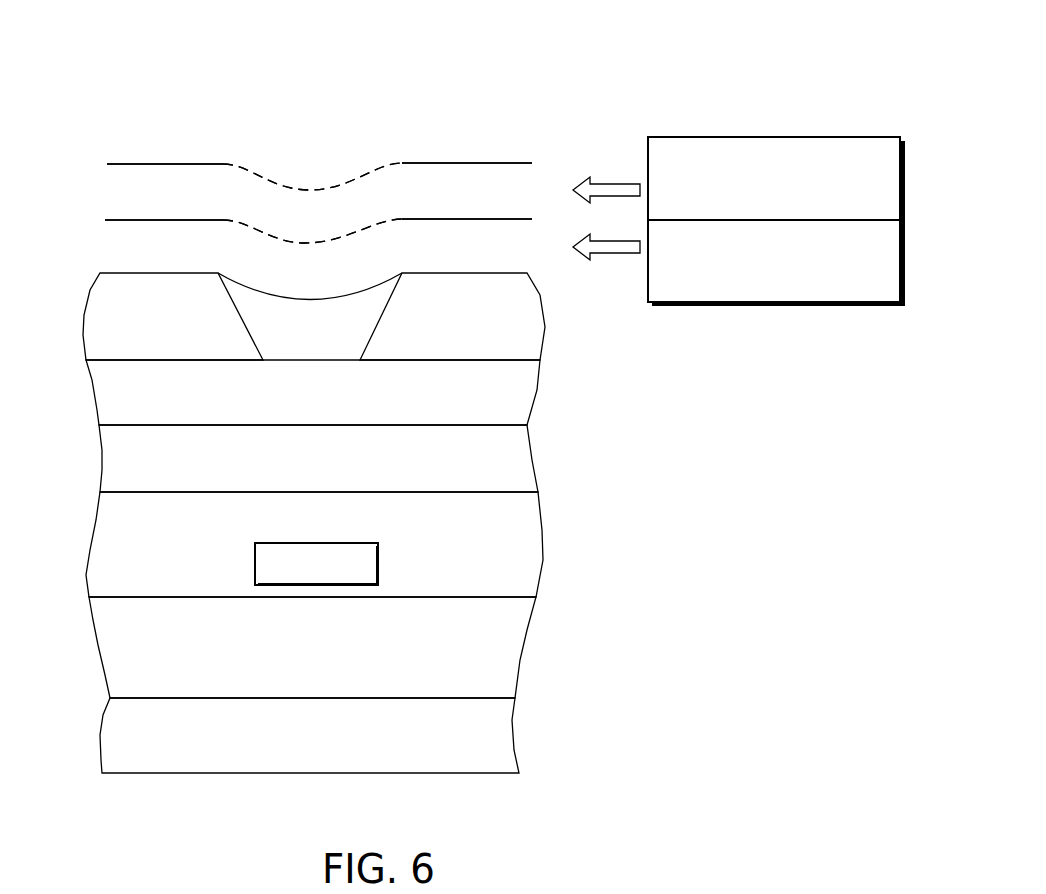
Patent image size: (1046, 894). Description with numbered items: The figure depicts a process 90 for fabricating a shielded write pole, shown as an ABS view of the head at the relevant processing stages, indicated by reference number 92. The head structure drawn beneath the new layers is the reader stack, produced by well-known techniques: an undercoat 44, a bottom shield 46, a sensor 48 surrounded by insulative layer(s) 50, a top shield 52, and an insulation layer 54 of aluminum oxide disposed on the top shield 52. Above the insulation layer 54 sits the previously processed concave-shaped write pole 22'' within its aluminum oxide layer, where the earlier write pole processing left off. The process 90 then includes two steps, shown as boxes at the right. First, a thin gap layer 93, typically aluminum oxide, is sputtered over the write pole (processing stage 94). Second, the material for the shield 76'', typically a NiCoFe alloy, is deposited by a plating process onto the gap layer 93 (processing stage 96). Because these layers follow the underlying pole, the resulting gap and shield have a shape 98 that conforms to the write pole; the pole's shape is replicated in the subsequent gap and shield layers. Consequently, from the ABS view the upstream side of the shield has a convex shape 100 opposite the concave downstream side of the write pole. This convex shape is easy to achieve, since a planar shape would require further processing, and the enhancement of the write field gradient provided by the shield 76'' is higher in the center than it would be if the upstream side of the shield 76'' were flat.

The write pole 22'' is at (314, 316).
The undercoat 44 is at (118, 742).
The bottom shield 46 is at (118, 643).
The sensor 48 is at (255, 563).
The insulative layer(s) 50 is at (103, 537).
The top shield 52 is at (105, 457).
The insulation layer 54 is at (100, 396).
The shield 76'' is at (319, 166).
The process 90 is at (746, 83).
The ABS view of the head at processing stages 92 is at (358, 110).
The gap layer 93 is at (103, 247).
The processing stage 94 is at (742, 302).
The processing stage 96 is at (668, 137).
The shape 98 is at (269, 172).
The convex shape 100 is at (380, 236).